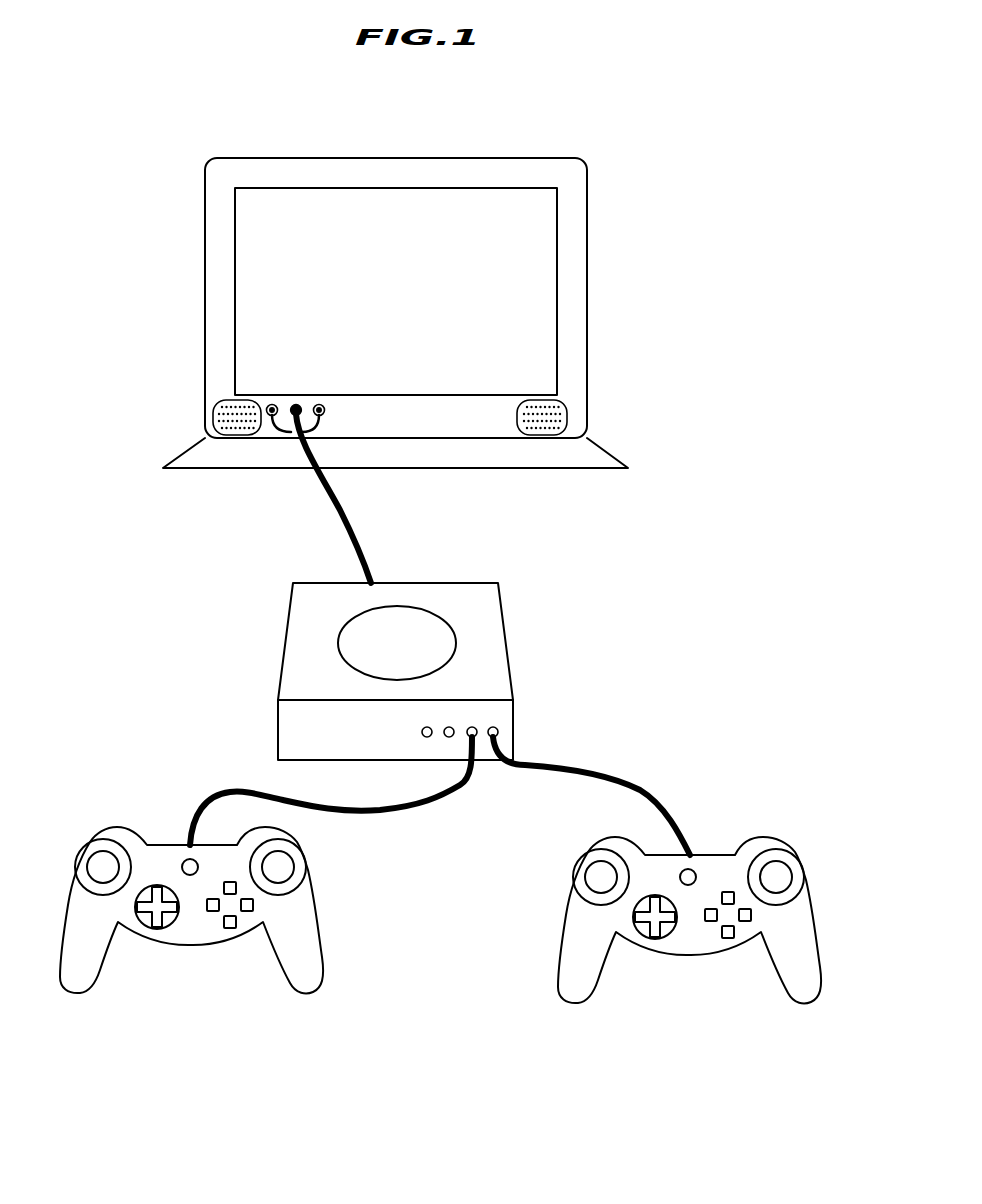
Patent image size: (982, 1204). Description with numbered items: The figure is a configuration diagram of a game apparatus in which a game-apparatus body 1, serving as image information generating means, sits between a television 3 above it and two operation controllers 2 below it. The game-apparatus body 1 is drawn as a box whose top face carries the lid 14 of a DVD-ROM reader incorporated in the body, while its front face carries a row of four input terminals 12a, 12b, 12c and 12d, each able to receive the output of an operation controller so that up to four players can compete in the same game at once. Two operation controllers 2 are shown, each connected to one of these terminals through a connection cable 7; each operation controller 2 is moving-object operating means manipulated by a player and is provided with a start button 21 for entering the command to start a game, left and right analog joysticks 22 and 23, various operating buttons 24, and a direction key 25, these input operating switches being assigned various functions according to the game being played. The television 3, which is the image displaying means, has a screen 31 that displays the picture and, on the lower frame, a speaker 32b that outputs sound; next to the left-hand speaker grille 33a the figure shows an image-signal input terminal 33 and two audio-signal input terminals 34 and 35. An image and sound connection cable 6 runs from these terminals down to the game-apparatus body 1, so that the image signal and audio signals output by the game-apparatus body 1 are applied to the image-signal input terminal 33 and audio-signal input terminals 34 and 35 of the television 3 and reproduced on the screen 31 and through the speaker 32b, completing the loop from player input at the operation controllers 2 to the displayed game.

The game-apparatus body 1 is at (475, 603).
The operation controller 2 is at (313, 900).
The television 3 is at (568, 266).
The image and sound connection cable 6 is at (340, 510).
The connection cable 7 is at (623, 780).
The input terminal 12a is at (500, 730).
The input terminal 12b is at (477, 723).
The input terminal 12c is at (453, 725).
The input terminal 12d is at (432, 727).
The lid of DVD-ROM reader 14 is at (338, 632).
The start button 21 is at (693, 870).
The analog joystick 22 is at (597, 877).
The analog joystick 23 is at (790, 867).
The operating buttons 24 is at (727, 915).
The direction key 25 is at (655, 925).
The screen 31 is at (558, 337).
The speaker 32b is at (568, 411).
The image-signal input terminal 33 is at (170, 411).
The speaker holes 33a is at (213, 408).
The audio-signal input terminal 34 is at (315, 417).
The audio-signal input terminal 35 is at (326, 413).